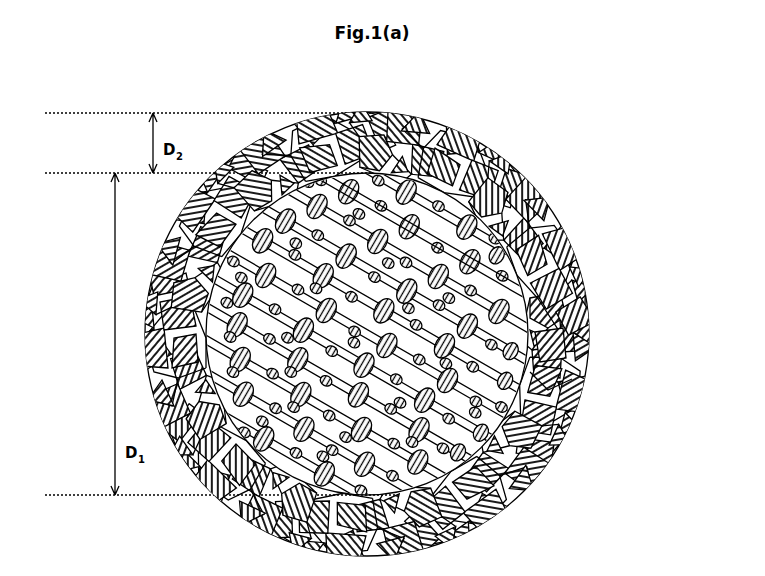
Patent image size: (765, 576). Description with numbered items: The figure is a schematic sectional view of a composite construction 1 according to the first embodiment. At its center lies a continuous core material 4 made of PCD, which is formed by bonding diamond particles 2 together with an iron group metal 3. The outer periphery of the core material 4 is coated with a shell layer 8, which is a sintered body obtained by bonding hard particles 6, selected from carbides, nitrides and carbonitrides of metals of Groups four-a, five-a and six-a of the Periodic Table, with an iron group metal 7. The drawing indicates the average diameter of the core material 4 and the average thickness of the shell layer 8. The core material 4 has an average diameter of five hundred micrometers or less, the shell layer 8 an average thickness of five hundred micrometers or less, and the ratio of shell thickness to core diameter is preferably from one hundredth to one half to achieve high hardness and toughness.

The composite construction 1 is at (574, 201).
The diamond particles 2 is at (588, 369).
The iron group metal 3 is at (572, 379).
The core material 4 is at (646, 333).
The hard particles 6 is at (567, 231).
The iron group metal 7 is at (567, 264).
The shell layer 8 is at (614, 217).